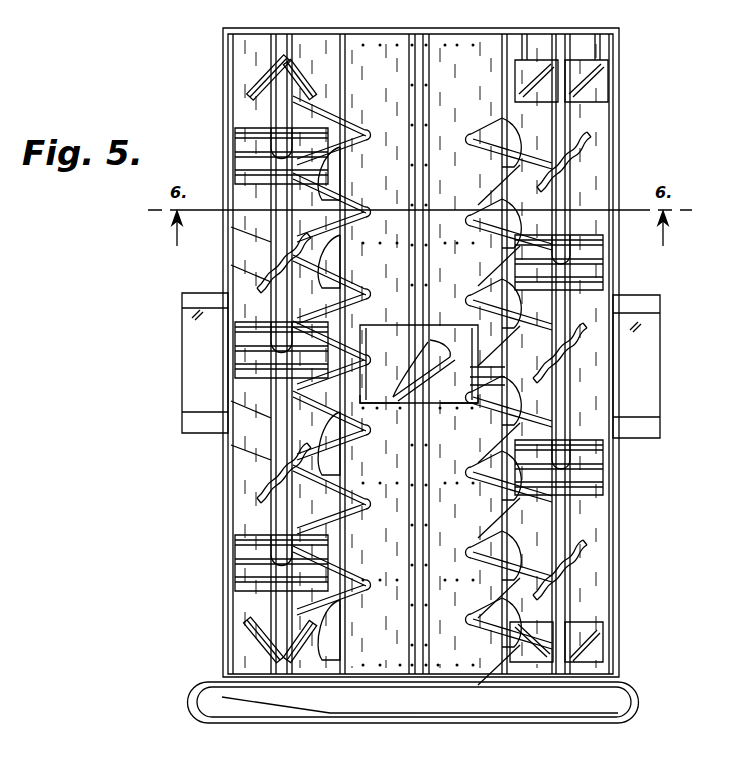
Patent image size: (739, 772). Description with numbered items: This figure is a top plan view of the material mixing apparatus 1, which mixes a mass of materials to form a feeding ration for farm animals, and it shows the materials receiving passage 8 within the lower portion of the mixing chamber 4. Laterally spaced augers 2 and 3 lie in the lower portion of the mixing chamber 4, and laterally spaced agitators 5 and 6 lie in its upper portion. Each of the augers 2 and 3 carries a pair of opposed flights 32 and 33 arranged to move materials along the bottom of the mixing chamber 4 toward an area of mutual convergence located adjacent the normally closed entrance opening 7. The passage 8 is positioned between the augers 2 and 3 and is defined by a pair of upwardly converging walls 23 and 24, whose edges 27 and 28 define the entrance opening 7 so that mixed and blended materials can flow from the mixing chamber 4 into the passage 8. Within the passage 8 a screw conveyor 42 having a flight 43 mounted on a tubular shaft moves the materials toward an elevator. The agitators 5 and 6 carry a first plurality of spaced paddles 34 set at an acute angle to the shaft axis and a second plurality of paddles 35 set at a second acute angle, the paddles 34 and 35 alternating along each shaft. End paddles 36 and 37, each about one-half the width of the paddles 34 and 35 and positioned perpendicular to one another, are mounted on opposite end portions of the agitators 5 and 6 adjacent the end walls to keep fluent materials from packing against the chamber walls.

The material mixing apparatus 1 is at (203, 487).
The auger 2 is at (337, 468).
The auger 3 is at (507, 495).
The mixing chamber 4 is at (388, 58).
The agitator 5 is at (273, 227).
The agitator 6 is at (570, 188).
The entrance opening 7 is at (383, 333).
The passage 8 is at (465, 330).
The upwardly converging wall 23 is at (373, 657).
The upwardly converging wall 24 is at (447, 658).
The edge 27 is at (382, 397).
The edge 28 is at (448, 397).
The flight 32 is at (362, 130).
The flight 33 is at (362, 506).
The paddles of first plurality 34 is at (240, 146).
The paddles of second plurality 35 is at (588, 133).
The end paddle 36 is at (252, 91).
The end paddle 37 is at (603, 73).
The screw conveyor 42 is at (420, 353).
The flight 43 is at (442, 361).